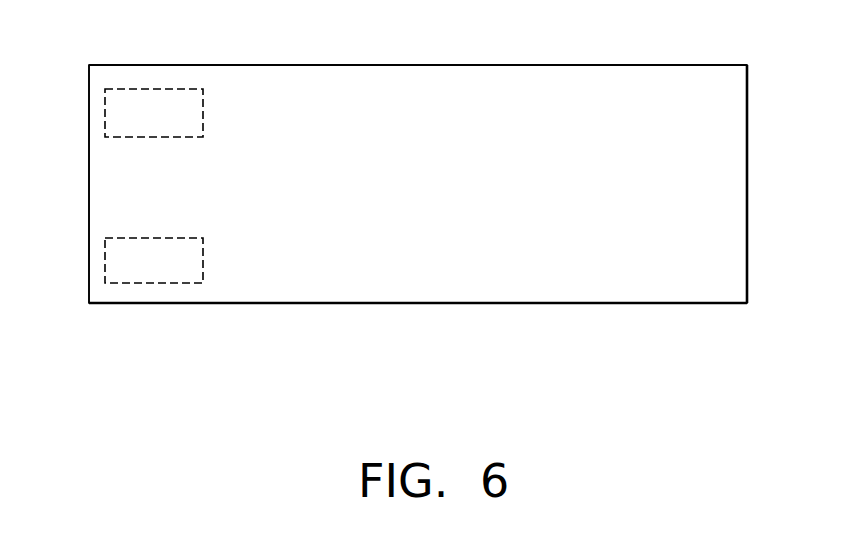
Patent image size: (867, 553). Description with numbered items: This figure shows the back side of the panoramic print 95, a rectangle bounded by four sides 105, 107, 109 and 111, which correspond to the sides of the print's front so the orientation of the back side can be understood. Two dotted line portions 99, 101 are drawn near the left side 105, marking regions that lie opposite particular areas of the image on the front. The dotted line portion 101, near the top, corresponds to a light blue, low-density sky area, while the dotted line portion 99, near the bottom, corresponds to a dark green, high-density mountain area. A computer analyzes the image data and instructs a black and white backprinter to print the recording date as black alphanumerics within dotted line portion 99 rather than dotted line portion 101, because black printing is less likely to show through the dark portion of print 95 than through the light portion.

The panoramic print 95 is at (575, 352).
The dotted line portion 99 is at (104, 262).
The dotted line portion 101 is at (104, 113).
The side 105 is at (89, 185).
The side 107 is at (418, 65).
The side 109 is at (747, 183).
The side 111 is at (418, 303).